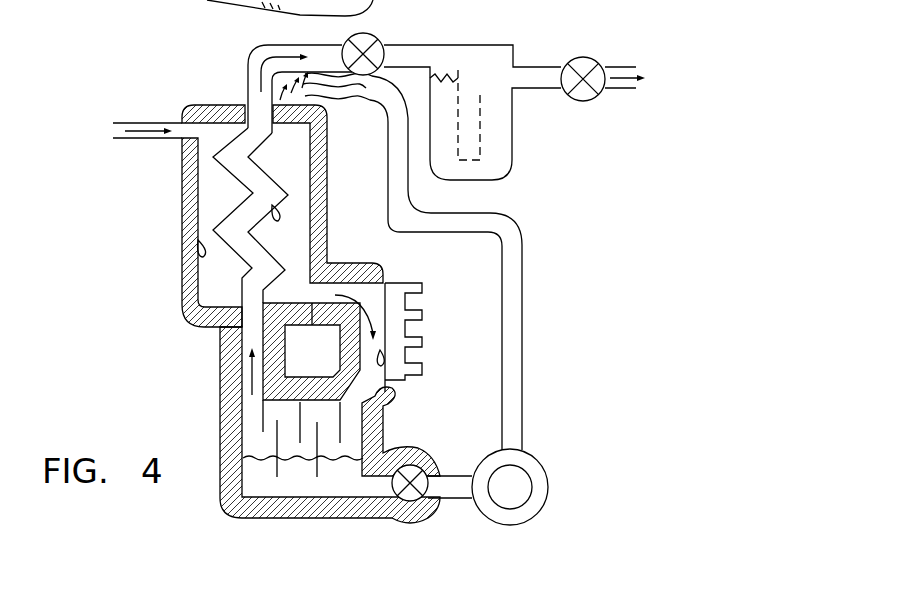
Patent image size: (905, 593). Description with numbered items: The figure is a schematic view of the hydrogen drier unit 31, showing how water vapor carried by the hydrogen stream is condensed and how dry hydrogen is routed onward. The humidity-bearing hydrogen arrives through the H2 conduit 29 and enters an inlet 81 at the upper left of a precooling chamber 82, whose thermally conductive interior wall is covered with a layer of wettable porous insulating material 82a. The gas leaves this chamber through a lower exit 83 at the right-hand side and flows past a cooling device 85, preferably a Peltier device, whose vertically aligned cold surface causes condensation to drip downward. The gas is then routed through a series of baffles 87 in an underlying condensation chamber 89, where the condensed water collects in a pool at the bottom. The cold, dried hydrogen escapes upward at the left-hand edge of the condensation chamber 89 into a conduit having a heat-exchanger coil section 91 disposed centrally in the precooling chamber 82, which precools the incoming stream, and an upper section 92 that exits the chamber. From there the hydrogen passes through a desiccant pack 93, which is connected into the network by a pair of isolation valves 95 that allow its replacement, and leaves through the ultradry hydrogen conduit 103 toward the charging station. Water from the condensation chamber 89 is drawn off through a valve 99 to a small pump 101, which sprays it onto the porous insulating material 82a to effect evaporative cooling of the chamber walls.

The H2 conduit 29 is at (140, 140).
The hydrogen drier unit 31 is at (113, 95).
The inlet 81 is at (182, 127).
The precooling chamber 82 is at (252, 193).
The porous insulating material 82a is at (190, 243).
The lower exit 83 is at (327, 297).
The cooling device 85 is at (397, 327).
The baffles 87 is at (317, 420).
The condensation chamber 89 is at (218, 358).
The heat-exchanger coil section 91 is at (275, 182).
The upper section 92 is at (253, 60).
The desiccant pack 93 is at (505, 182).
The isolation valves 95 is at (378, 70).
The valve 99 is at (434, 463).
The pump 101 is at (550, 483).
The ultradry hydrogen conduit 103 is at (619, 90).